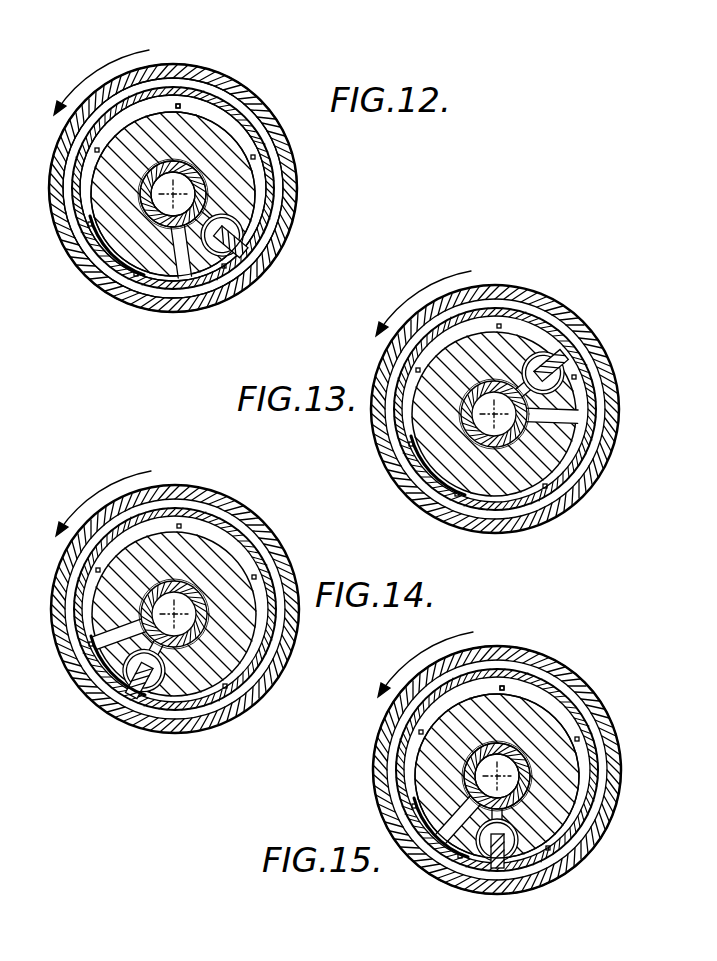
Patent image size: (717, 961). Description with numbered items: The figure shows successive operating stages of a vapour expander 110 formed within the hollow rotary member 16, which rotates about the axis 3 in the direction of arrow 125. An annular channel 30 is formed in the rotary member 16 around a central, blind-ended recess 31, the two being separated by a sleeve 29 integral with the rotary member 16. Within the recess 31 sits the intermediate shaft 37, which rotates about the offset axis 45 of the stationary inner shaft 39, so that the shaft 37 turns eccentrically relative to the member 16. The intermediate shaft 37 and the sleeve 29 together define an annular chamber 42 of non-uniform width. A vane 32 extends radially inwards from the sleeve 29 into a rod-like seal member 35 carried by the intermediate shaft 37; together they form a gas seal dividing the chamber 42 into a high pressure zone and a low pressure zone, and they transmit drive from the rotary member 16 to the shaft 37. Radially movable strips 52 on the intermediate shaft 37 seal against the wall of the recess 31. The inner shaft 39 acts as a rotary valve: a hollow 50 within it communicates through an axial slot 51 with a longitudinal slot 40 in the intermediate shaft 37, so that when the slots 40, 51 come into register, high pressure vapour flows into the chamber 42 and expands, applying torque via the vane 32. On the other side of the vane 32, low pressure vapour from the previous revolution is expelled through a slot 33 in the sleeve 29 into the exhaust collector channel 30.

In FIG. 12, the axis 3 is at (150, 186).
In FIG. 15, the axis 3 is at (493, 774).
In FIG. 12, the rotary member 16 is at (66, 260).
In FIG. 15, the rotary member 16 is at (400, 856).
In FIG. 12, the sleeve 29 is at (258, 116).
In FIG. 13, the sleeve 29 is at (580, 450).
In FIG. 14, the sleeve 29 is at (250, 542).
In FIG. 15, the sleeve 29 is at (600, 772).
In FIG. 12, the annular channel 30 is at (263, 137).
In FIG. 15, the annular channel 30 is at (593, 765).
In FIG. 12, the recess 31 is at (215, 110).
In FIG. 12, the vane 32 is at (255, 252).
In FIG. 13, the vane 32 is at (548, 360).
In FIG. 14, the vane 32 is at (134, 694).
In FIG. 12, the slot 33 is at (252, 245).
In FIG. 15, the slot 33 is at (520, 858).
In FIG. 12, the seal member 35 is at (244, 256).
In FIG. 12, the intermediate shaft 37 is at (173, 276).
In FIG. 15, the intermediate shaft 37 is at (515, 718).
In FIG. 12, the inner shaft 39 is at (110, 252).
In FIG. 15, the inner shaft 39 is at (458, 784).
In FIG. 12, the longitudinal slot 40 is at (196, 258).
In FIG. 13, the longitudinal slot 40 is at (577, 397).
In FIG. 15, the longitudinal slot 40 is at (462, 845).
In FIG. 12, the annular chamber 42 is at (142, 116).
In FIG. 13, the annular chamber 42 is at (487, 326).
In FIG. 14, the annular chamber 42 is at (177, 527).
In FIG. 15, the annular chamber 42 is at (477, 688).
In FIG. 12, the axis 45 is at (158, 258).
In FIG. 15, the axis 45 is at (493, 784).
In FIG. 12, the hollow 50 is at (180, 191).
In FIG. 12, the axial slot 51 is at (200, 216).
In FIG. 13, the axial slot 51 is at (518, 437).
In FIG. 15, the axial slot 51 is at (522, 797).
In FIG. 12, the strips 52 is at (180, 108).
In FIG. 15, the strips 52 is at (560, 730).
In FIG. 12, the expander 110 is at (52, 226).
In FIG. 12, the arrow 125 is at (107, 64).
In FIG. 13, the arrow 125 is at (429, 285).
In FIG. 14, the arrow 125 is at (88, 499).
In FIG. 15, the arrow 125 is at (396, 672).